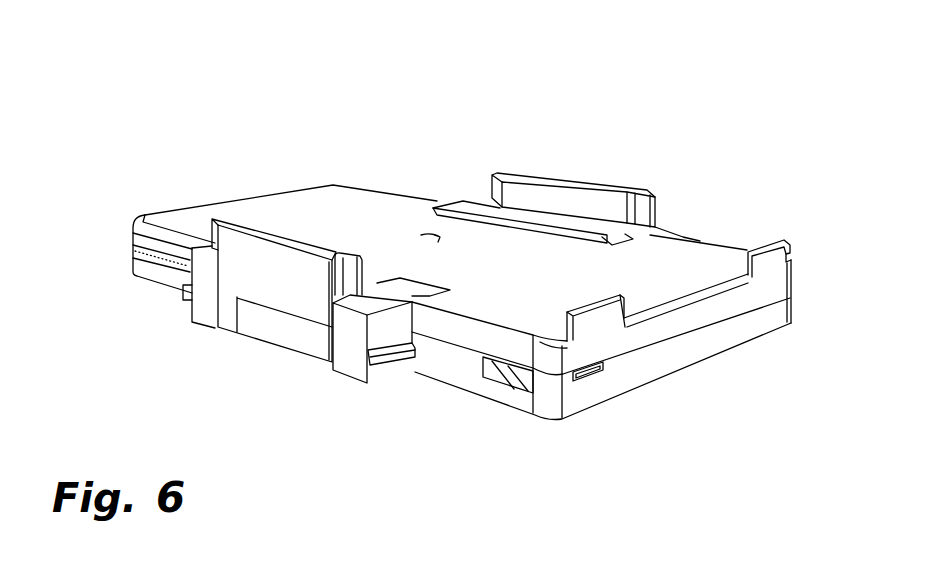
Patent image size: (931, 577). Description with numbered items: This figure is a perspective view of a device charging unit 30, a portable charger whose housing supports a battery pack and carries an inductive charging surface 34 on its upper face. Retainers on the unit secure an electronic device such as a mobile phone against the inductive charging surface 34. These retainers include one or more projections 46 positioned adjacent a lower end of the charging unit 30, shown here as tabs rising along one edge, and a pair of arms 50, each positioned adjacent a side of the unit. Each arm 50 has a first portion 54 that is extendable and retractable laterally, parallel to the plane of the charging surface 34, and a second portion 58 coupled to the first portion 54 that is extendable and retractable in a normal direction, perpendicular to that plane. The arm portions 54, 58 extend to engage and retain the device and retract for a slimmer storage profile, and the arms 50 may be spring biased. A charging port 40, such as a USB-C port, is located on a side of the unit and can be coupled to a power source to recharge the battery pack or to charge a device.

The device charging unit 30 is at (160, 135).
The inductive charging surface 34 is at (336, 200).
The charging port 40 is at (598, 372).
The projections 46 is at (600, 315).
The arms 50 is at (449, 293).
The first portion 54 is at (482, 200).
The second portion 58 is at (572, 190).